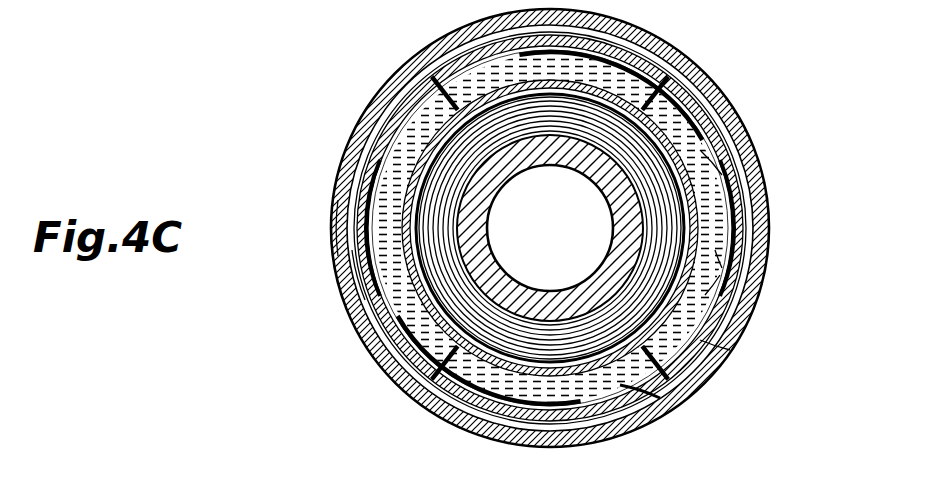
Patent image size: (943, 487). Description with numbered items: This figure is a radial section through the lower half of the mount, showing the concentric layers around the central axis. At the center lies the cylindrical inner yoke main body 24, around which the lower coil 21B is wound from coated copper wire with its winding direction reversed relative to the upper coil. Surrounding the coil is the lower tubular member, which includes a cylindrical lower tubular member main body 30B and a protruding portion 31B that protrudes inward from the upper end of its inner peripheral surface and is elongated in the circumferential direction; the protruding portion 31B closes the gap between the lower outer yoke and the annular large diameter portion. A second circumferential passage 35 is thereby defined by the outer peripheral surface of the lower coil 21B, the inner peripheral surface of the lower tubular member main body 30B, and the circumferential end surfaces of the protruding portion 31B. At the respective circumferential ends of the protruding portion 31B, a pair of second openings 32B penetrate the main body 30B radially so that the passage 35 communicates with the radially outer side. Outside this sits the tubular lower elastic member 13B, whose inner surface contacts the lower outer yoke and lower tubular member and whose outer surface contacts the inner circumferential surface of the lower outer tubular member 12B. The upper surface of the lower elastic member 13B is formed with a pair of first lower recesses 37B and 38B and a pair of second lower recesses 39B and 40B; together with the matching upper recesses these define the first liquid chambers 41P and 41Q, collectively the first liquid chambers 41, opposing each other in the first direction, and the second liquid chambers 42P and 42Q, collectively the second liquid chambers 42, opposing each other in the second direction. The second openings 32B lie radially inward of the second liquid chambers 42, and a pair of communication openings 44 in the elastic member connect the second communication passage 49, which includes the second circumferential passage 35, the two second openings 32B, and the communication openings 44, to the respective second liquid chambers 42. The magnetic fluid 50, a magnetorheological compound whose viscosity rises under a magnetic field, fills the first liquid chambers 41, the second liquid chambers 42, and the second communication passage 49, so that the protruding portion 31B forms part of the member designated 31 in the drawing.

The first liquid chamber 41P is at (520, 50).
The first liquid chamber 41Q is at (455, 412).
The first liquid chambers 41 is at (484, 221).
The second liquid chamber 42P is at (345, 200).
The second liquid chamber 42Q is at (720, 237).
The second liquid chambers 42 is at (557, 228).
The protruding portion 31B is at (570, 228).
The housing 31 is at (625, 72).
The first lower recess 37B is at (603, 38).
The second opening 32B is at (400, 112).
The magnetic fluid 50 is at (348, 160).
The communication opening 44 is at (715, 140).
The inner yoke main body 24 is at (510, 157).
The lower outer tubular member 12B is at (337, 242).
The second lower recess 40B is at (345, 280).
The lower tubular member main body 30B is at (380, 312).
The lower coil 21B is at (410, 350).
The second communication passage 49 is at (605, 420).
The first lower recess 38B is at (665, 405).
The lower elastic member 13B is at (725, 358).
The second circumferential passage 35 is at (717, 302).
The second lower recess 39B is at (723, 260).